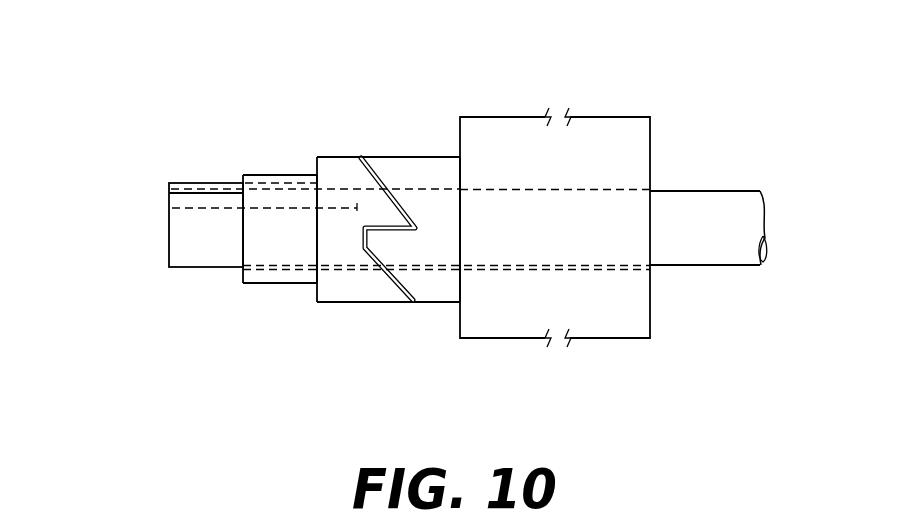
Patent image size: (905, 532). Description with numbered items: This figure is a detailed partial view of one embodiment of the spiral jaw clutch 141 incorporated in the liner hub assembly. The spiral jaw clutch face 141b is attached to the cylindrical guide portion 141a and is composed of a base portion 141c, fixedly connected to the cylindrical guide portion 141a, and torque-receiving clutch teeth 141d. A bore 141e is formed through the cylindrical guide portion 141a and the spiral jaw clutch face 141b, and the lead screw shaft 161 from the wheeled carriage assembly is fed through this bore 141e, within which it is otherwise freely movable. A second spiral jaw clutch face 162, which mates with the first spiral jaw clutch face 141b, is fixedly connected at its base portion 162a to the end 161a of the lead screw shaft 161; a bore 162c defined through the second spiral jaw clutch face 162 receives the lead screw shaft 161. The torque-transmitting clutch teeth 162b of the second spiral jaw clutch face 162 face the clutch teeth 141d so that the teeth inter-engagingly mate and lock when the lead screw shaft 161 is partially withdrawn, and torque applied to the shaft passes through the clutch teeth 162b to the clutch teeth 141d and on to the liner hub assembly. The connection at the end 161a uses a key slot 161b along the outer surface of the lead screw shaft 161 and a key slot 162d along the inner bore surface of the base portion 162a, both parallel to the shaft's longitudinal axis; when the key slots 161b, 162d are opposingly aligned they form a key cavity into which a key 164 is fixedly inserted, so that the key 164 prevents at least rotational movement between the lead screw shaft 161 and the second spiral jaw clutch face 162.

The spiral jaw clutch 141 is at (650, 70).
The cylindrical guide portion 141a is at (482, 117).
The spiral jaw clutch face 141b is at (440, 168).
The base portion 141c is at (458, 290).
The torque-receiving clutch teeth 141d is at (392, 284).
The bore 141e is at (603, 189).
The lead screw shaft 161 is at (690, 265).
The end of the lead screw shaft 161a is at (168, 255).
The key slot 161b is at (193, 208).
The second spiral jaw clutch face 162 is at (190, 128).
The base portion 162a is at (292, 175).
The torque-transmitting clutch teeth 162b is at (368, 163).
The bore 162c is at (284, 272).
The key slot 162d is at (258, 184).
The key 164 is at (184, 183).